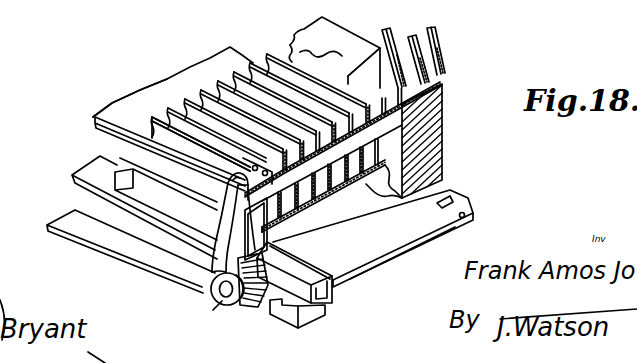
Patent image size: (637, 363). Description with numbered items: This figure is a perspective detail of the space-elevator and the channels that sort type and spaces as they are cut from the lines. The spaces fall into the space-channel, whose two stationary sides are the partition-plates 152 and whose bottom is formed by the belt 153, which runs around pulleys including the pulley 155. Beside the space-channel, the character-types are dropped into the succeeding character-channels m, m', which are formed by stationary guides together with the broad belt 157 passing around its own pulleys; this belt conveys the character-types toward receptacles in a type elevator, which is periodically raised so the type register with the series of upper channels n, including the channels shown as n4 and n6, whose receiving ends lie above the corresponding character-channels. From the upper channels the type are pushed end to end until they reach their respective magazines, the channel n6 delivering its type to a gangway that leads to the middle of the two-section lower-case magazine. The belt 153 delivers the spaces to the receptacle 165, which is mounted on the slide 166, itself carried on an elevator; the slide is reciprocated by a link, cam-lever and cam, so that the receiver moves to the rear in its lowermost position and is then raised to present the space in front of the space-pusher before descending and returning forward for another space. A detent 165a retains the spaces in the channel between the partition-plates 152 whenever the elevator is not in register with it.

The channel n is at (250, 121).
The character-channel m is at (164, 130).
The character-channel m' is at (332, 185).
The end block n4 is at (327, 83).
The channel n6 is at (441, 46).
The partition-plates 152 is at (128, 167).
The belt 153 is at (73, 180).
The pulley 155 is at (230, 259).
The broad belt 157 is at (152, 88).
The receptacle 165 is at (328, 308).
The detent 165a is at (212, 281).
The slide 166 is at (447, 201).